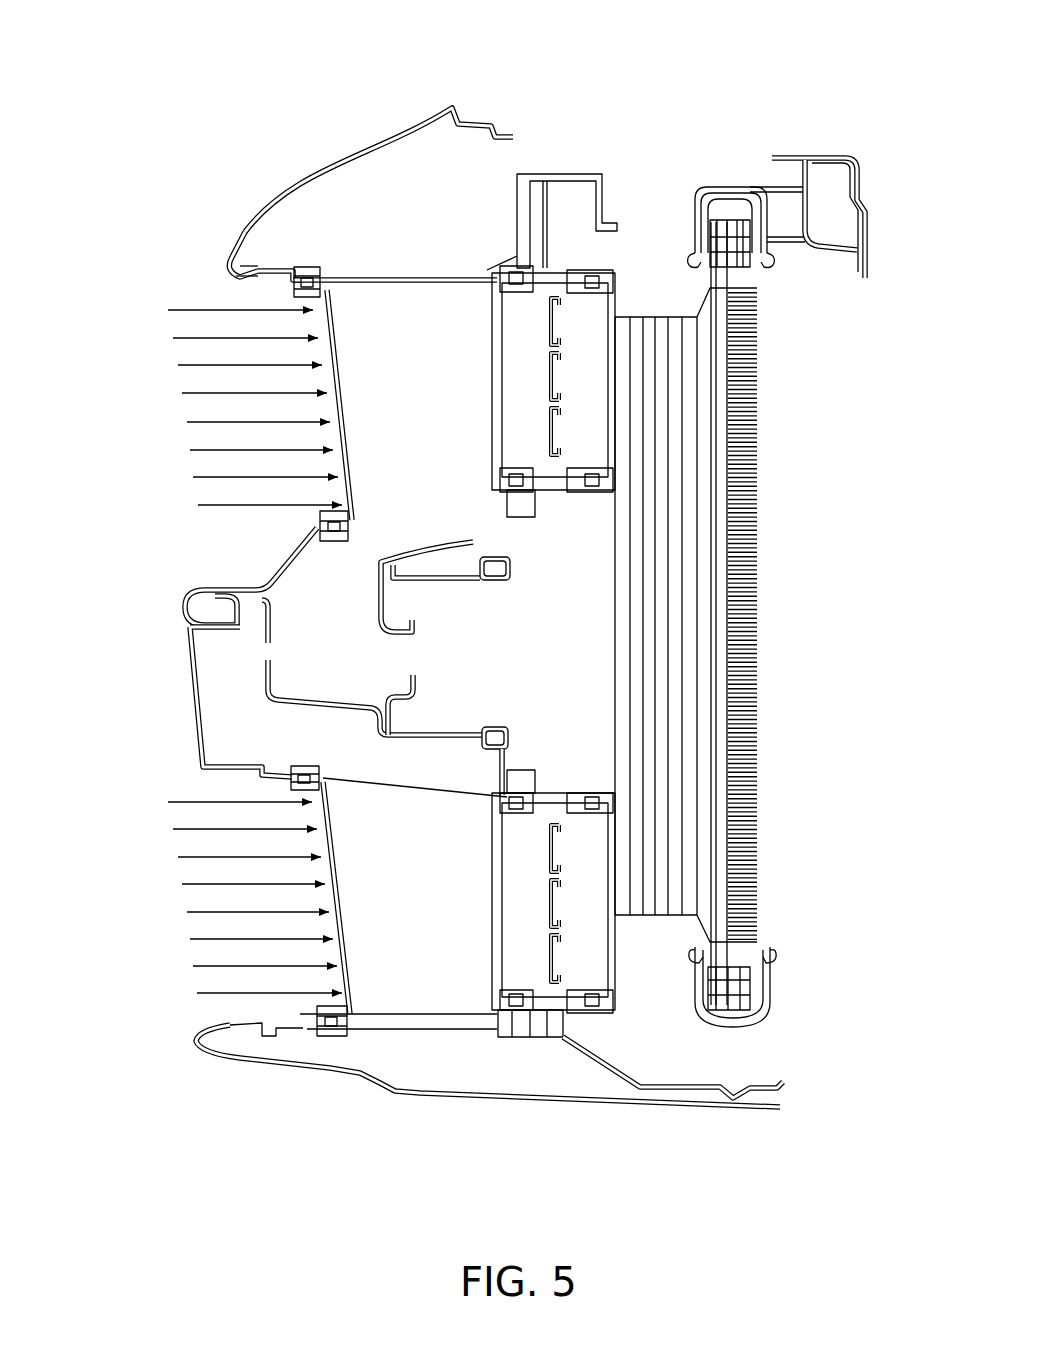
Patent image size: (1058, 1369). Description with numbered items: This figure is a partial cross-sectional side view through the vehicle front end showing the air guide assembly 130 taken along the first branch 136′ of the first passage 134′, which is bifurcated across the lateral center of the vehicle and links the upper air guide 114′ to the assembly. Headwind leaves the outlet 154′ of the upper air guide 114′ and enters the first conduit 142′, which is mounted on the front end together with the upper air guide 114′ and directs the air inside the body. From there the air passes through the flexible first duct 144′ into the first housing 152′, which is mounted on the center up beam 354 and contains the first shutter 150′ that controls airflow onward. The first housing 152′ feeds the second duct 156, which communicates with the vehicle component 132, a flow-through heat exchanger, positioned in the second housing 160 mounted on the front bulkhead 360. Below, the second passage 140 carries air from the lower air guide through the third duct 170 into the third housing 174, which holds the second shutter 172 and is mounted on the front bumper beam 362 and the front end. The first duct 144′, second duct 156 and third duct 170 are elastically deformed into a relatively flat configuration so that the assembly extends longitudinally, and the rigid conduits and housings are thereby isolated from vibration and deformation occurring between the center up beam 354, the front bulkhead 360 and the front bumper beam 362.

The upper air guide 114′ is at (250, 270).
The air guide assembly 130 is at (143, 605).
The vehicle component 132 is at (752, 583).
The first passage 134′ is at (362, 205).
The first branch 136′ is at (418, 200).
The second passage 140 is at (356, 770).
The first conduit 142′ is at (250, 275).
The first duct 144′ is at (347, 277).
The first shutter 150′ is at (547, 325).
The first housing 152′ is at (557, 257).
The outlet 154′ is at (247, 272).
The second duct 156 is at (660, 317).
The second housing 160 is at (740, 282).
The third duct 170 is at (372, 1030).
The second shutter 172 is at (548, 945).
The third housing 174 is at (563, 1037).
The center up beam 354 is at (560, 172).
The front bulkhead 360 is at (852, 155).
The front bumper beam 362 is at (450, 727).